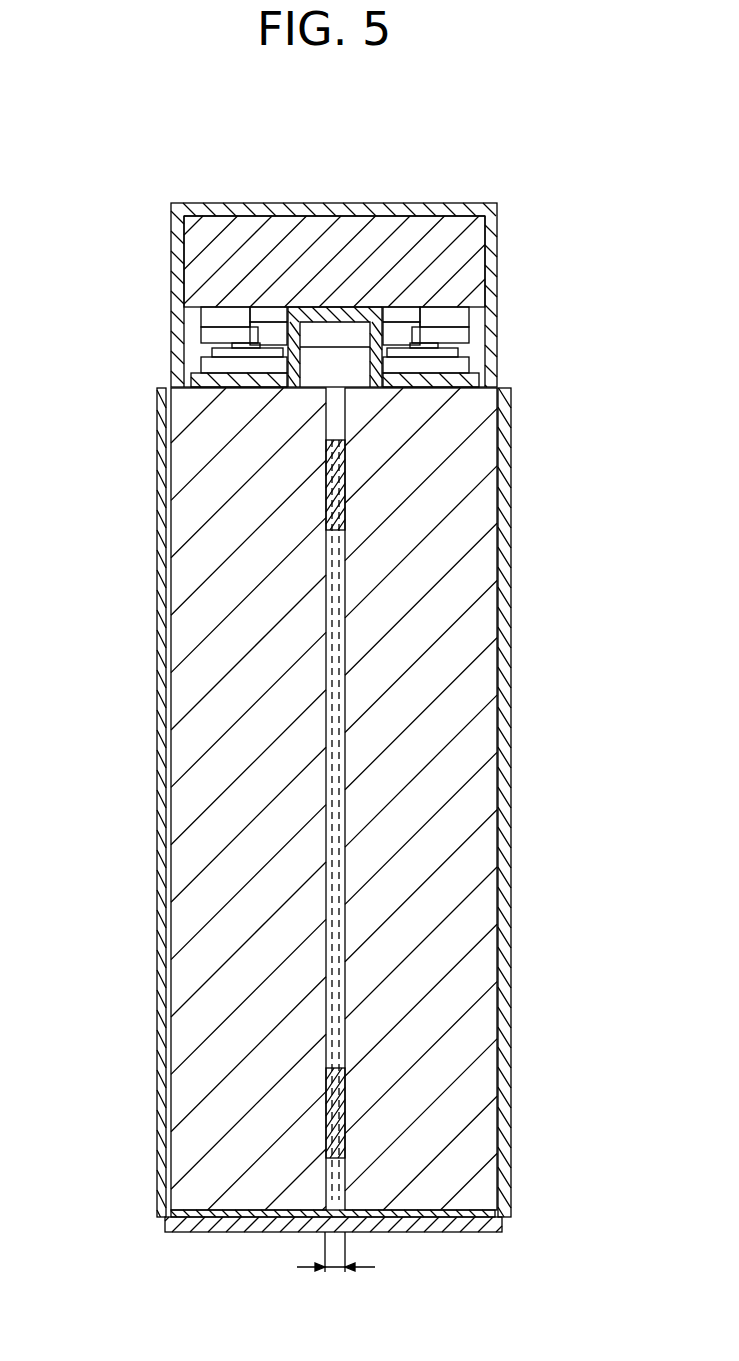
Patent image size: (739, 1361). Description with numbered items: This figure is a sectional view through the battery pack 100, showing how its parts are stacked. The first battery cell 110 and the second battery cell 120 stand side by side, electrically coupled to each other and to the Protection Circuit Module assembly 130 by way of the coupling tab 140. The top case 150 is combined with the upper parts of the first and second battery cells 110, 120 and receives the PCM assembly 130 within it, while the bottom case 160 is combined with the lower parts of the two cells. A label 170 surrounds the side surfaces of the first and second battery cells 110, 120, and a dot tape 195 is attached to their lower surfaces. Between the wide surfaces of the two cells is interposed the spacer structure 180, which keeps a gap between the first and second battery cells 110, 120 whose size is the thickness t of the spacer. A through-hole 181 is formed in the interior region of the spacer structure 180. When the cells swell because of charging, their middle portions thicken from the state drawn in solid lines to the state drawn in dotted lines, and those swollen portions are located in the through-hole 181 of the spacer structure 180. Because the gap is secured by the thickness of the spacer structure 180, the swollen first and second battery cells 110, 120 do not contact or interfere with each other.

The battery pack 100 is at (79, 151).
The first battery cell 110 is at (195, 918).
The second battery cell 120 is at (472, 572).
The Protection Circuit Module (PCM) assembly 130 is at (417, 228).
The coupling tab 140 is at (298, 362).
The top case 150 is at (242, 203).
The bottom case 160 is at (415, 1232).
The label 170 is at (503, 698).
The spacer structure 180 is at (333, 492).
The through-hole 181 is at (333, 718).
The dot tape 195 is at (473, 1232).